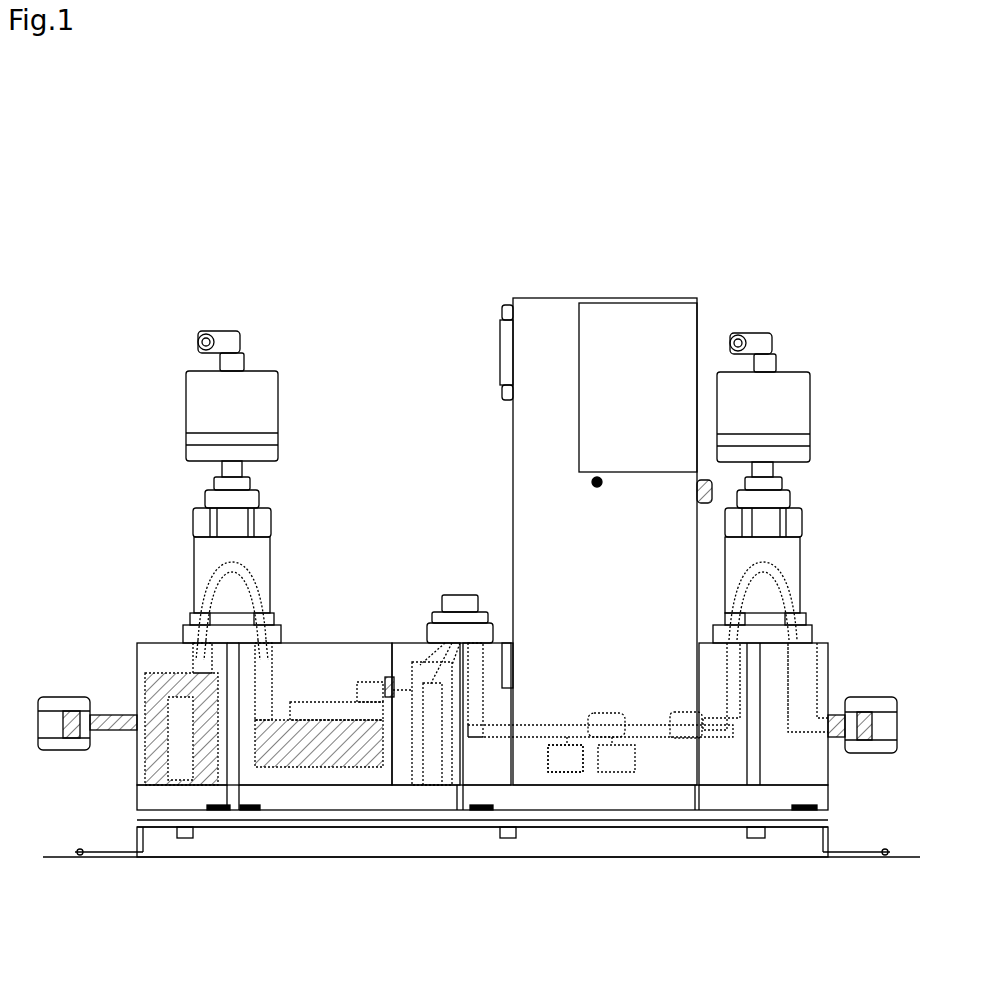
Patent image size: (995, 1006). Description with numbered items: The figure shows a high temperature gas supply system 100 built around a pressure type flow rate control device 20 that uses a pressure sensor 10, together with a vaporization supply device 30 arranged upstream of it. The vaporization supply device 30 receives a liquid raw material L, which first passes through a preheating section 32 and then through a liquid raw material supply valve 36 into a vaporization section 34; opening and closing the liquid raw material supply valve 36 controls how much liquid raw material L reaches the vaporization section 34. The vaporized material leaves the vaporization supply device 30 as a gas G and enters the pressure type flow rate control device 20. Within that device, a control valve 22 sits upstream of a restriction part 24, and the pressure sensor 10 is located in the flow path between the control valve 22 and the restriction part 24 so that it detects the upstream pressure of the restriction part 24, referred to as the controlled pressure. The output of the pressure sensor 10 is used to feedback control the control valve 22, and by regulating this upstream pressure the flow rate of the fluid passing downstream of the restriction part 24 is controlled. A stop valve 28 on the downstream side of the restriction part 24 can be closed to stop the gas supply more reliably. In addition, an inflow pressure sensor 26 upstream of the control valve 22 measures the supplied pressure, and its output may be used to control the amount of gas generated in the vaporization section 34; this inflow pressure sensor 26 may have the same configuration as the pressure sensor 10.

The high temperature gas supply system 100 is at (481, 505).
The pressure sensor 10 is at (617, 773).
The pressure type flow rate control device 20 is at (570, 541).
The control valve 22 is at (608, 702).
The restriction part 24 is at (698, 740).
The inflow pressure sensor 26 is at (560, 773).
The stop valve 28 is at (796, 580).
The vaporization supply device 30 is at (301, 531).
The preheating section 32 is at (178, 792).
The vaporization section 34 is at (320, 770).
The liquid raw material supply valve 36 is at (200, 557).
The liquid raw material L is at (108, 732).
The gas G is at (480, 730).